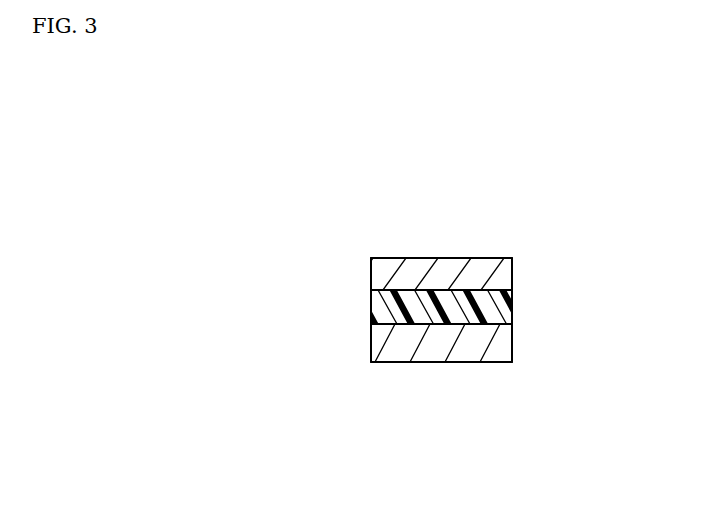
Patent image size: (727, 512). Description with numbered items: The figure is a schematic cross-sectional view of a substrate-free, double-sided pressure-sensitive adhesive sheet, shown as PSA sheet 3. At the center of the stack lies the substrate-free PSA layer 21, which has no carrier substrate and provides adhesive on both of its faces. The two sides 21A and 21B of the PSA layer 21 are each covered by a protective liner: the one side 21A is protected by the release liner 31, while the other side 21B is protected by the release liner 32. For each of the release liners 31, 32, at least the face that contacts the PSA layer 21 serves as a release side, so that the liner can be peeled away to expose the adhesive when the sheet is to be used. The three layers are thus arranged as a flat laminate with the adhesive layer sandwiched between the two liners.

The PSA sheet 3 is at (487, 215).
The release liner 32 is at (512, 279).
The substrate-free PSA layer 21 is at (512, 310).
The release liner 31 is at (512, 347).
The side of PSA layer 21B is at (383, 290).
The side of PSA layer 21A is at (393, 325).